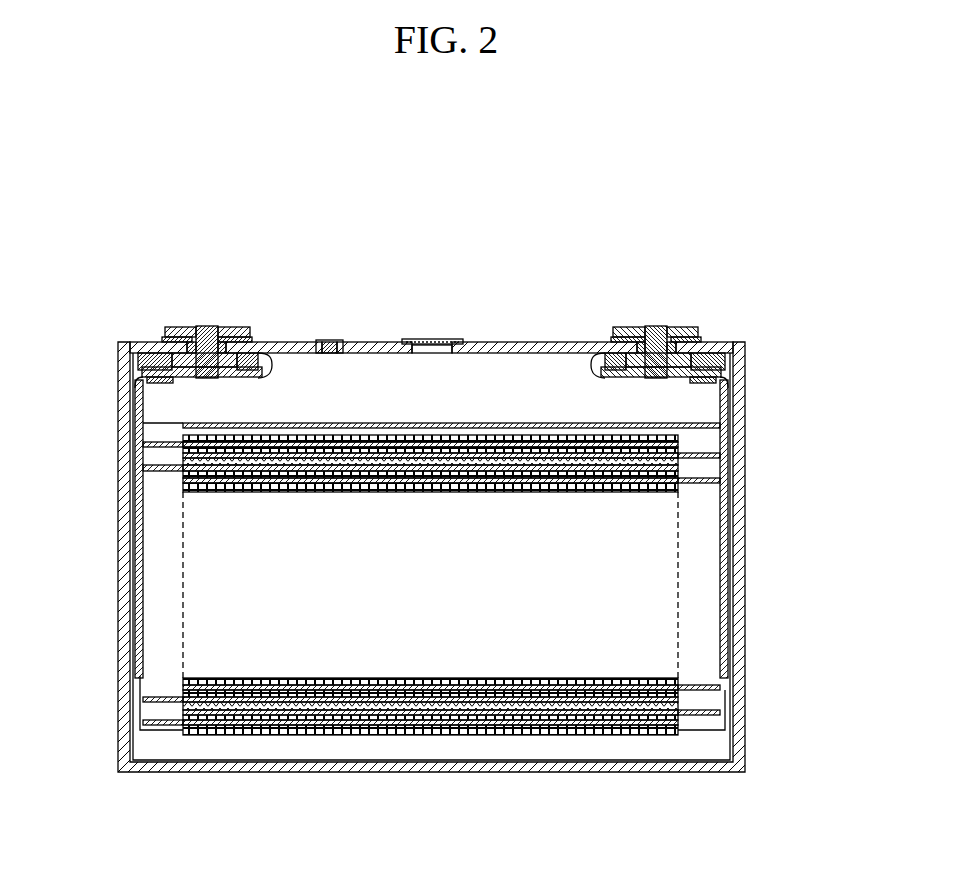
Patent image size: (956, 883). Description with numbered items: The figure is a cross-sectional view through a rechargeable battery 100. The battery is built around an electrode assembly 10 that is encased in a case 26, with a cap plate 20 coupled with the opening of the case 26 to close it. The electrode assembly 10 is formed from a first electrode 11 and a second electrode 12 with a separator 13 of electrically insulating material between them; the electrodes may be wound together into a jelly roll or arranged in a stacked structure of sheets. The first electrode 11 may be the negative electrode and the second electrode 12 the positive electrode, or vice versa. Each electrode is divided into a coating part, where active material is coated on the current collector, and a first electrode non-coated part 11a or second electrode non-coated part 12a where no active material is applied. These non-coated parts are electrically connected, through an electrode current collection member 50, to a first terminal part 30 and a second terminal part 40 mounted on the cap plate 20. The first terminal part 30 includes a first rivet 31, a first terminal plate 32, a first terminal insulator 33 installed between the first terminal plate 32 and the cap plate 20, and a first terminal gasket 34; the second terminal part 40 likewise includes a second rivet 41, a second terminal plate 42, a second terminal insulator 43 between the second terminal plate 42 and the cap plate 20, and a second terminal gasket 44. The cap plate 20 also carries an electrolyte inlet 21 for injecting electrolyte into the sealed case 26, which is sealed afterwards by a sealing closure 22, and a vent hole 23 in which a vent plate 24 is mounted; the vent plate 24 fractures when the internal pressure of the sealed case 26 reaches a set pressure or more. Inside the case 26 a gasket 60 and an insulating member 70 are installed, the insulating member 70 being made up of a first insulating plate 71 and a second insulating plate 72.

The rechargeable battery 100 is at (414, 196).
The electrode assembly 10 is at (499, 652).
The first electrode 11 is at (238, 725).
The first electrode non-coated part 11a is at (157, 725).
The second electrode 12 is at (312, 712).
The second electrode non-coated part 12a is at (697, 713).
The separator 13 is at (435, 705).
The cap plate 20 is at (523, 334).
The electrolyte inlet 21 is at (327, 353).
The sealing closure 22 is at (326, 342).
The vent hole 23 is at (427, 353).
The vent plate 24 is at (433, 339).
The case 26 is at (738, 630).
The first terminal part 30 is at (297, 268).
The first rivet 31 is at (208, 318).
The first terminal plate 32 is at (236, 327).
The first terminal insulator 33 is at (253, 338).
The first terminal gasket 34 is at (178, 327).
The second terminal part 40 is at (718, 271).
The second rivet 41 is at (655, 318).
The second terminal plate 42 is at (680, 327).
The second terminal insulator 43 is at (698, 340).
The second terminal gasket 44 is at (642, 344).
The electrode current collection member 50 is at (125, 458).
The gasket 60 is at (127, 363).
The insulating member 70 is at (793, 400).
The first insulating plate 71 is at (702, 442).
The second insulating plate 72 is at (658, 424).